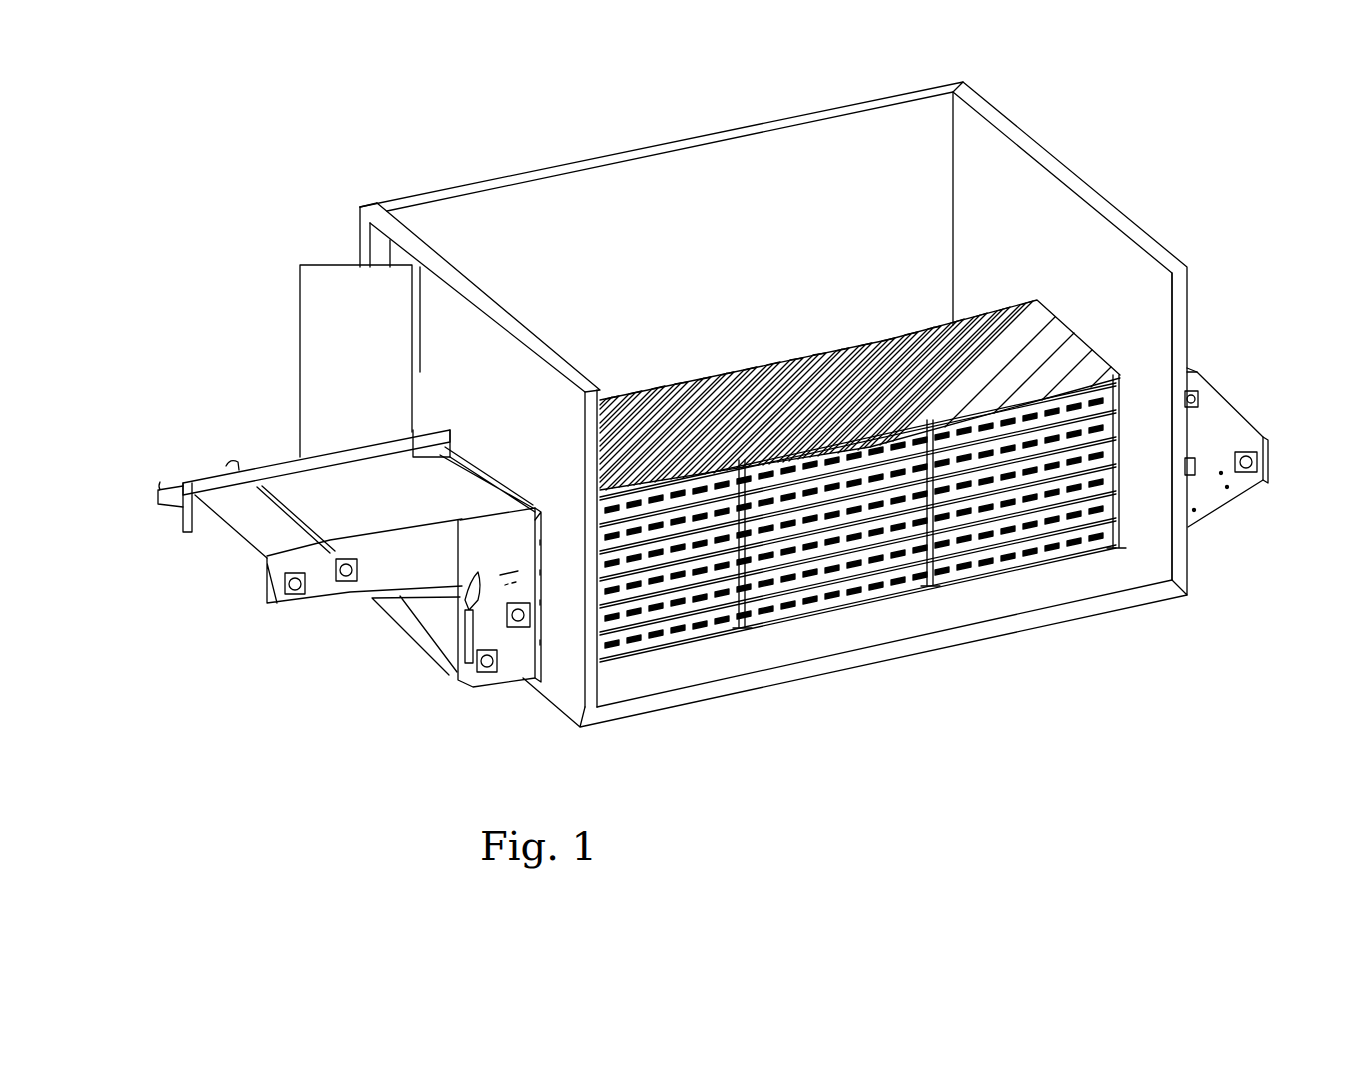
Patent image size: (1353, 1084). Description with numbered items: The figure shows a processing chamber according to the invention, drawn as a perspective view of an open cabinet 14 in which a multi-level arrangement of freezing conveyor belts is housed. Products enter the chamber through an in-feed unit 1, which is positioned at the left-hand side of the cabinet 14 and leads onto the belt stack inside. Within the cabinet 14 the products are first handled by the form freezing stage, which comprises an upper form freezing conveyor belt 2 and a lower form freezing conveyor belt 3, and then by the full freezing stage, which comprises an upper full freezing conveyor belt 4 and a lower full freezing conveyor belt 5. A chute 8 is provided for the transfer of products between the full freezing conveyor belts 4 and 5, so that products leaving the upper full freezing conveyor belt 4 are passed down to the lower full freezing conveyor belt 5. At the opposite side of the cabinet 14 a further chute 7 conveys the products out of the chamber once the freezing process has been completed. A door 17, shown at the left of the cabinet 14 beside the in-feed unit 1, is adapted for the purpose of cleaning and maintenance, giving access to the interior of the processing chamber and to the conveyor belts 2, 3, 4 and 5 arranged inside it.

The in-feed unit 1 is at (282, 460).
The upper form freezing conveyor belt 2 is at (742, 627).
The lower form freezing conveyor belt 3 is at (790, 545).
The upper full freezing conveyor belt 4 is at (870, 560).
The lower full freezing conveyor belt 5 is at (973, 557).
The chute 7 is at (1272, 485).
The chute 8 is at (440, 600).
The cabinet 14 is at (512, 178).
The door 17 is at (332, 300).